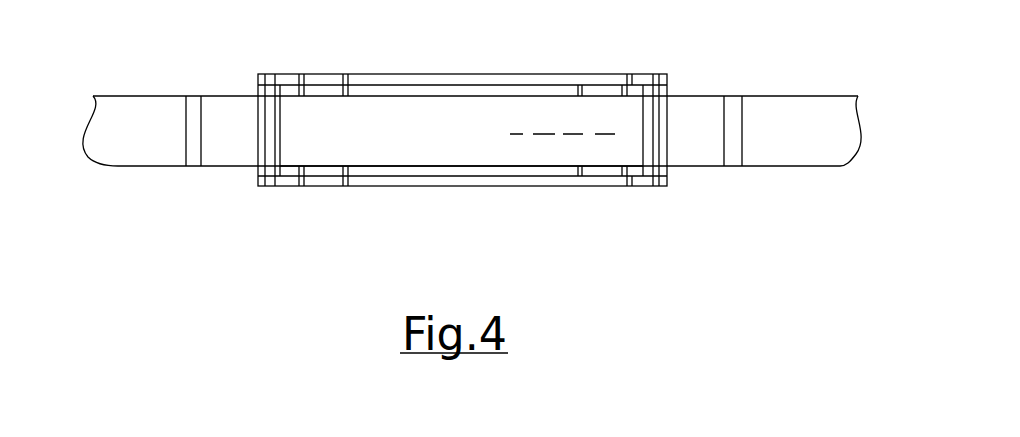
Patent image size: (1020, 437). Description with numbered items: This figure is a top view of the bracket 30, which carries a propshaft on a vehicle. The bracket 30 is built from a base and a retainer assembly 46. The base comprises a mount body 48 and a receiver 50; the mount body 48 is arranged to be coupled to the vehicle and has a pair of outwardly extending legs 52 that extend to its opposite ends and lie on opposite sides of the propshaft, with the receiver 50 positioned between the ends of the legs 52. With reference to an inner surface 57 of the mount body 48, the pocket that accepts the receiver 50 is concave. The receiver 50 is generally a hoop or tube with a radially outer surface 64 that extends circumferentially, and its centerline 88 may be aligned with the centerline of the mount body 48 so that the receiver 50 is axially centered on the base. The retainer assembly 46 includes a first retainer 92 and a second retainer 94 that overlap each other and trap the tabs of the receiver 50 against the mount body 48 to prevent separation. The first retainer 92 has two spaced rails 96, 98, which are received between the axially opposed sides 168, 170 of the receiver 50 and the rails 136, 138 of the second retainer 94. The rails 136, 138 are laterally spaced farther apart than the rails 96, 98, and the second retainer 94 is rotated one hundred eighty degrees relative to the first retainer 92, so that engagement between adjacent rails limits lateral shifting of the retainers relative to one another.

The bracket 30 is at (472, 160).
The retainer assembly 46 is at (479, 139).
The mount body 48 is at (217, 166).
The legs 52 is at (723, 166).
The inner surface 57 is at (210, 148).
The rail 136 is at (410, 75).
The axially opposed side 168 is at (487, 97).
The rail 96 is at (613, 90).
The rail 138 is at (393, 186).
The rail 98 is at (500, 170).
The axially opposed side 170 is at (602, 166).
The second retainer 94 is at (268, 189).
The first retainer 92 is at (306, 182).
The radially outer surface 64 is at (461, 168).
The receiver 50 is at (436, 168).
The centerline 88 is at (543, 135).